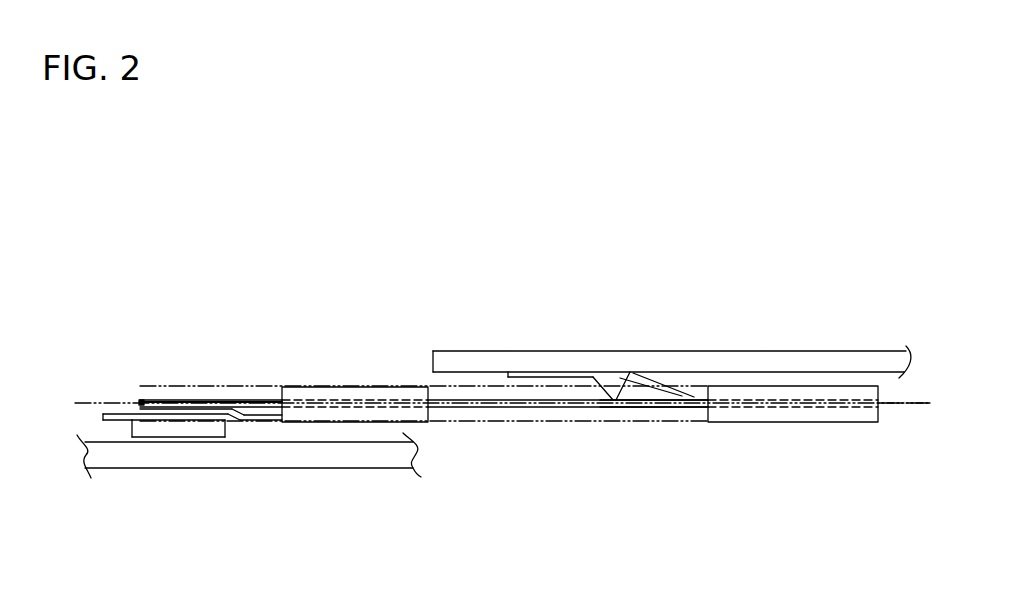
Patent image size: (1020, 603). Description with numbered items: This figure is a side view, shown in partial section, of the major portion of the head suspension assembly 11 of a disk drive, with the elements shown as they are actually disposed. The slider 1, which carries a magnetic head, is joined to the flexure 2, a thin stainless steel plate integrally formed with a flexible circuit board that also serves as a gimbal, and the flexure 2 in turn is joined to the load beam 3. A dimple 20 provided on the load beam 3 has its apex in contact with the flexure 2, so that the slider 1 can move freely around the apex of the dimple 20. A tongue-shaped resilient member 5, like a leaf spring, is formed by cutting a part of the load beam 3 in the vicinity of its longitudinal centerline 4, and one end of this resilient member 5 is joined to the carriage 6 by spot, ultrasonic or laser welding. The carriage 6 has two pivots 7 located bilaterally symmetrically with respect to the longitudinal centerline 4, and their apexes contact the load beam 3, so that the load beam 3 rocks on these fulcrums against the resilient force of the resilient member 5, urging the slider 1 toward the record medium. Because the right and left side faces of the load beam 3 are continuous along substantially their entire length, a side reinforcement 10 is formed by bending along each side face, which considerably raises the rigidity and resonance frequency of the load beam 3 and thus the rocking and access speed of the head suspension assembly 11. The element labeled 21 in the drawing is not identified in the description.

The slider 1 is at (200, 428).
The flexure 2 is at (112, 413).
The load beam 3 is at (458, 402).
The longitudinal centerline 4 is at (922, 402).
The resilient member 5 is at (647, 403).
The carriage 6 is at (497, 362).
The pivot 7 is at (616, 393).
The side reinforcement 10 is at (345, 392).
The head suspension assembly 11 is at (670, 561).
The dimple 20 is at (178, 409).
The lower substrate 21 is at (102, 458).